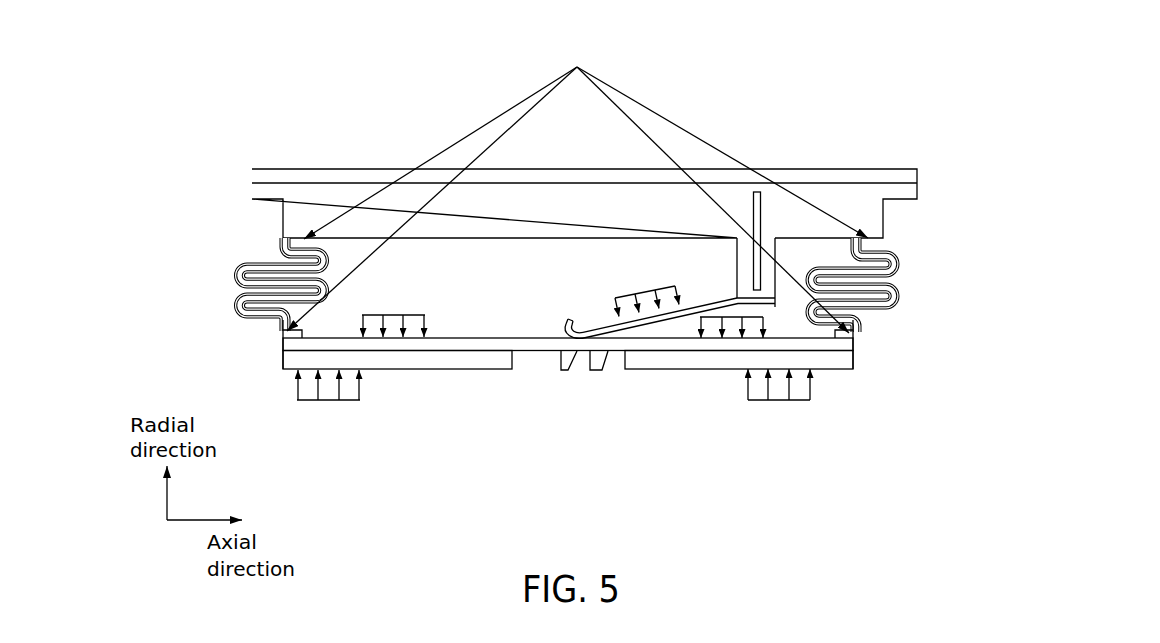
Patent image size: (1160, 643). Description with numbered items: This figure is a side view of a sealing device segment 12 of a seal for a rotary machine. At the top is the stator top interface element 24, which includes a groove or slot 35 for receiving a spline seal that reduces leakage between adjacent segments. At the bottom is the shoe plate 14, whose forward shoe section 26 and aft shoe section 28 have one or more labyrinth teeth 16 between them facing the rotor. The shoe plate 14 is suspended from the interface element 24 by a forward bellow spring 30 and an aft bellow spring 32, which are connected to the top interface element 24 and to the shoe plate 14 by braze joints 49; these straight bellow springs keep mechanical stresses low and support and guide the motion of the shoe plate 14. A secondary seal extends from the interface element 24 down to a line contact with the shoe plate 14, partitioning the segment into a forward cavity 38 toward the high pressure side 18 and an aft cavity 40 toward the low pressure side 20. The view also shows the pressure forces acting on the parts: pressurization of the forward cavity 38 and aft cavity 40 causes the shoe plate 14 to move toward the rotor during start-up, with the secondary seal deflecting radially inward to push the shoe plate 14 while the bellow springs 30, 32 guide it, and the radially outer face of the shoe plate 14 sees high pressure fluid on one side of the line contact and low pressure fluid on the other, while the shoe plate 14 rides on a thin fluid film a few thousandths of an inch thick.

The sealing device segment 12 is at (842, 57).
The shoe plate 14 is at (290, 346).
The labyrinth teeth 16 is at (568, 362).
The high pressure side 18 is at (206, 248).
The low pressure side 20 is at (930, 289).
The stator top interface element 24 is at (290, 167).
The forward shoe section 26 is at (440, 370).
The aft shoe section 28 is at (838, 370).
The forward bellow spring 30 is at (235, 280).
The aft bellow spring 32 is at (905, 262).
The groove or slot 35 is at (761, 207).
The forward cavity 38 is at (500, 283).
The aft cavity 40 is at (828, 259).
The braze joints 49 is at (577, 187).